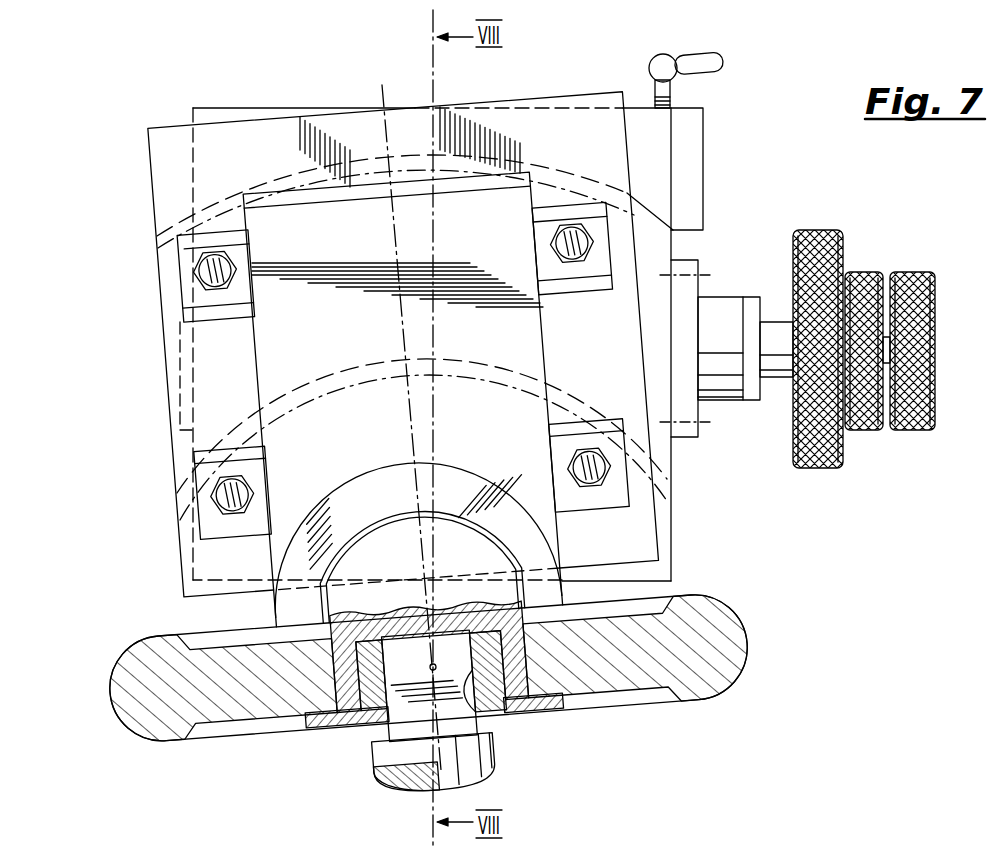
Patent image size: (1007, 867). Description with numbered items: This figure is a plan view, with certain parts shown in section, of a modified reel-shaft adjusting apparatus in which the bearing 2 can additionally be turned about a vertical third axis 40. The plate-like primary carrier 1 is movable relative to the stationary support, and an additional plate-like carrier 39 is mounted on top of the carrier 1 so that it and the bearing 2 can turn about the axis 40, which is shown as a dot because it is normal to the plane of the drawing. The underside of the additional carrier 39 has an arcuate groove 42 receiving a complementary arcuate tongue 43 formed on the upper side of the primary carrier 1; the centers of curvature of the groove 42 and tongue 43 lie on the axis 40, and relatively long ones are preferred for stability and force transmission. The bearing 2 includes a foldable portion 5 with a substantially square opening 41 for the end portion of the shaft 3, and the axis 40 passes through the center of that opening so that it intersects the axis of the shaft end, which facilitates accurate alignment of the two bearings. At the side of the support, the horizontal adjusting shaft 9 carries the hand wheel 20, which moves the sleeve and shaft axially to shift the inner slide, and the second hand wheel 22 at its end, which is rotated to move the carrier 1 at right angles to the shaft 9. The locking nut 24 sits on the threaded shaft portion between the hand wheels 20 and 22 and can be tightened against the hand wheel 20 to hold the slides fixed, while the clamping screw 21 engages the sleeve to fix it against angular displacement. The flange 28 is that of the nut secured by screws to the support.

The carrier 1 is at (652, 243).
The bearing 2 is at (153, 346).
The shaft 3 is at (383, 760).
The foldable portion of the bearing 5 is at (577, 718).
The adjusting shaft 9 is at (778, 323).
The hand wheel 20 is at (823, 232).
The clamping screw 21 is at (655, 95).
The second hand wheel 22 is at (914, 285).
The locking nut 24 is at (866, 278).
The flange 28 is at (686, 440).
The additional carrier 39 is at (546, 120).
The third axis 40 is at (430, 662).
The square opening 41 is at (480, 720).
The arcuate groove 42 is at (297, 397).
The arcuate tongue 43 is at (383, 385).